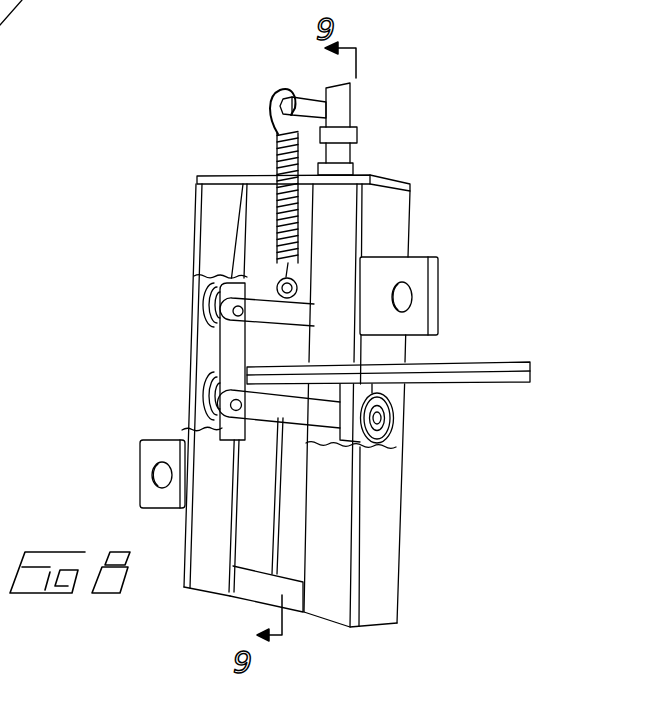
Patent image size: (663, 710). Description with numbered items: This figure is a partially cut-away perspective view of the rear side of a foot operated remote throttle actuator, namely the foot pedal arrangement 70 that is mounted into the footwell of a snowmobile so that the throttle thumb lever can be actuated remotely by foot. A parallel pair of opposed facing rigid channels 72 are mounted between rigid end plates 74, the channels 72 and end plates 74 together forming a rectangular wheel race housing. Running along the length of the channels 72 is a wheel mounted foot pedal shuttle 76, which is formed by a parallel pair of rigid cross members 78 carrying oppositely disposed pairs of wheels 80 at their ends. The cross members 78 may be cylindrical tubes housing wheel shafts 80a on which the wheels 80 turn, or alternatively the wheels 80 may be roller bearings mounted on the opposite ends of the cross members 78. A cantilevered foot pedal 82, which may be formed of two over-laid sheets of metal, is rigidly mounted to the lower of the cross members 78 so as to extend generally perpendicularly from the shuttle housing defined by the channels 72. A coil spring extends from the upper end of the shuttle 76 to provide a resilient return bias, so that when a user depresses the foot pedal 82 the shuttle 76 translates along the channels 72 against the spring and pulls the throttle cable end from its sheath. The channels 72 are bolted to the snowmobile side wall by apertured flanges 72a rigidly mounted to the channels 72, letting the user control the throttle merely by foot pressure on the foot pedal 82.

The foot pedal arrangement 70 is at (466, 176).
The rigid channels 72 is at (197, 234).
The apertured flanges 72a is at (140, 484).
The rigid end plates 74 is at (248, 174).
The foot pedal shuttle 76 is at (207, 360).
The cross members 78 is at (212, 316).
The wheels 80 is at (210, 304).
The wheel shafts 80a is at (381, 420).
The cantilevered foot pedal 82 is at (464, 360).